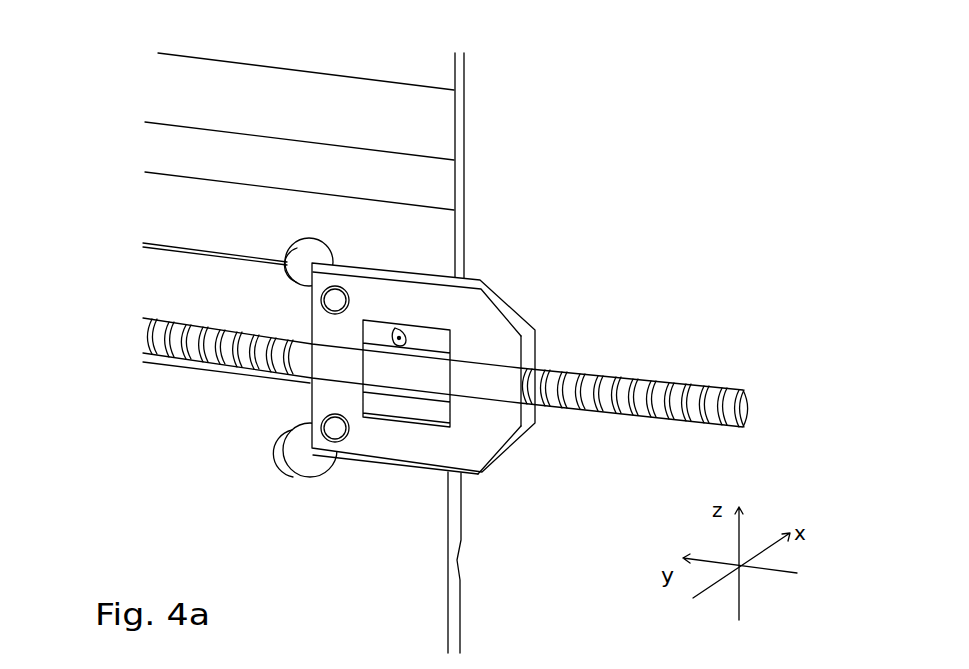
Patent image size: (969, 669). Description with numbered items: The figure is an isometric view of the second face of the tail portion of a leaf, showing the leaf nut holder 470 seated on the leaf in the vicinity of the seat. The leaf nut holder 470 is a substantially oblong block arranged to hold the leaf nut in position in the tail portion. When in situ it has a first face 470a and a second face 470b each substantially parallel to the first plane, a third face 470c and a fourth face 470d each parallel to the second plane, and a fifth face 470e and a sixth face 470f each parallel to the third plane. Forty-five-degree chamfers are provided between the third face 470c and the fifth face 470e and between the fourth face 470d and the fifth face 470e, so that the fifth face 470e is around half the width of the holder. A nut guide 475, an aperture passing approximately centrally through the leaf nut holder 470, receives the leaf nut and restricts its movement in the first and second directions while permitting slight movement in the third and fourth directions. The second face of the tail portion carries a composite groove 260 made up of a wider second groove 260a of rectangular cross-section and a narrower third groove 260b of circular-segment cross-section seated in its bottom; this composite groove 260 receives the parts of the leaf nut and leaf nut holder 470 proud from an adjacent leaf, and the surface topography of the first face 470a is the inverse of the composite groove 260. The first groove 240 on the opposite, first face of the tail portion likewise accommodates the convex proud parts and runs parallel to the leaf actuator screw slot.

The first groove 240 is at (458, 563).
The composite groove 260 is at (394, 117).
The second groove 260a is at (433, 125).
The third groove 260b is at (438, 185).
The leaf nut holder 470 is at (445, 376).
The first face 470a is at (393, 442).
The second face 470b is at (538, 413).
The third face 470c is at (475, 270).
The fourth face 470d is at (471, 476).
The fifth face 470e is at (532, 347).
The sixth face 470f is at (308, 403).
The nut guide 475 is at (395, 328).